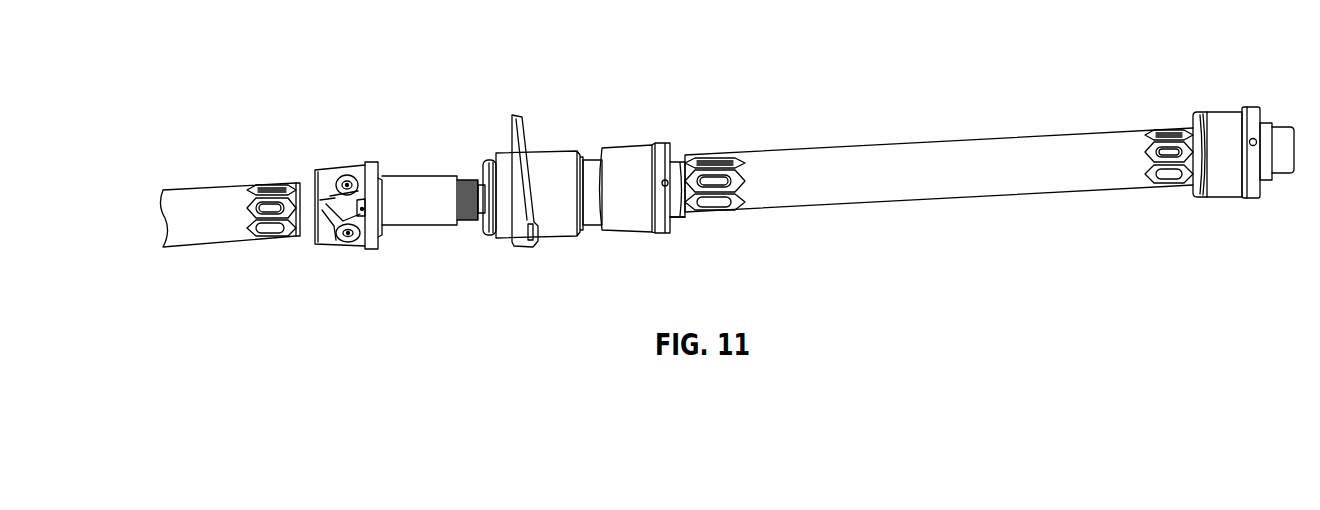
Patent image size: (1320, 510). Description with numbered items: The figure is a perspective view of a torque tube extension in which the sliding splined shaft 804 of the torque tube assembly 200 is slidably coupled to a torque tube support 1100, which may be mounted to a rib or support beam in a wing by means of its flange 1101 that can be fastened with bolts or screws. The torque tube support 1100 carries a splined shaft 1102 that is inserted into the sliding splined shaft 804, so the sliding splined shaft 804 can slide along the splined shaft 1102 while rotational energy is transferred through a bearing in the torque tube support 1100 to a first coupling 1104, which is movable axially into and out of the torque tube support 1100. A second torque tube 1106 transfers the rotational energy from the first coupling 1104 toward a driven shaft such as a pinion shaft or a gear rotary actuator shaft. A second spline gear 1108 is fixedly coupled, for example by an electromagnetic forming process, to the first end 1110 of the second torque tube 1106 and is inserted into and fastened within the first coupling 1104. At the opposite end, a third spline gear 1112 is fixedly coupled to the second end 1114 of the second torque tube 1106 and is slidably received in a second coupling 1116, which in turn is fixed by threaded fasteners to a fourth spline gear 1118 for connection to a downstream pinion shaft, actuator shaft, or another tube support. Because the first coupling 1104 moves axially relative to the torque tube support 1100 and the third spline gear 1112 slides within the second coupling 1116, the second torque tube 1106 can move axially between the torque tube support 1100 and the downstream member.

The torque tube assembly 200 is at (185, 90).
The sliding splined shaft 804 is at (417, 187).
The torque tube support 1100 is at (553, 170).
The flange 1101 is at (516, 120).
The splined shaft 1102 is at (470, 170).
The first coupling 1104 is at (628, 165).
The second torque tube 1106 is at (875, 162).
The second spline gear 1108 is at (683, 165).
The first end 1110 is at (683, 220).
The third spline gear 1112 is at (1183, 135).
The second end 1114 is at (1183, 183).
The second coupling 1116 is at (1222, 120).
The fourth spline gear 1118 is at (1270, 158).